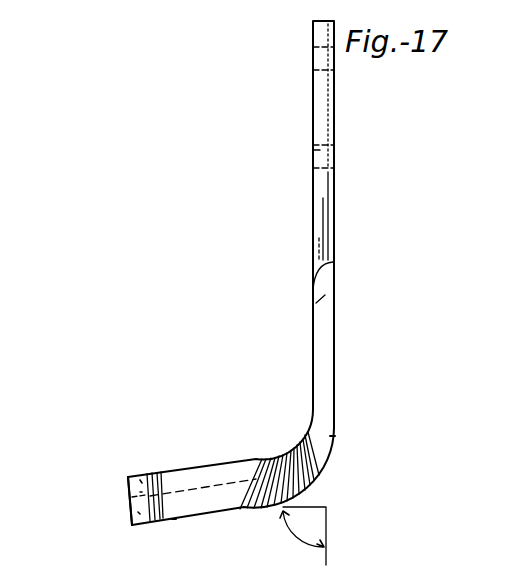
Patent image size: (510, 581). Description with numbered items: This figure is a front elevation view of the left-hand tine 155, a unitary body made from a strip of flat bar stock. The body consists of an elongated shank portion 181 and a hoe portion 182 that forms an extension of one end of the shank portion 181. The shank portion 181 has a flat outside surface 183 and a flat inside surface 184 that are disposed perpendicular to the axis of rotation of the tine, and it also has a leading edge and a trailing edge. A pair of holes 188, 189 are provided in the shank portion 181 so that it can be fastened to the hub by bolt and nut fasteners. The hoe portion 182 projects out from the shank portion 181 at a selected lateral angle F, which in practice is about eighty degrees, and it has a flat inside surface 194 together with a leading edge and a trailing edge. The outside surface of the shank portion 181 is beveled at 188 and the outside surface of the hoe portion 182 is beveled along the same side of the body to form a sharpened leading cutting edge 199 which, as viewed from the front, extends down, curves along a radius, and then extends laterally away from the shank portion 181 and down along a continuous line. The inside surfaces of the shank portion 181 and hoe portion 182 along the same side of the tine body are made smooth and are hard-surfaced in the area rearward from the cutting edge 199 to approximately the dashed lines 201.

The left-hand tine 155 is at (227, 277).
The shank portion 181 is at (330, 107).
The hoe portion 182 is at (193, 476).
The outside surface 183 is at (334, 181).
The inside surface 184 is at (313, 196).
The hole 188 is at (325, 60).
The hole 189 is at (320, 150).
The inside surface 194 is at (128, 508).
The leading cutting edge 199 is at (305, 4).
The dashed lines 201 is at (128, 493).
The lateral angle F is at (290, 531).